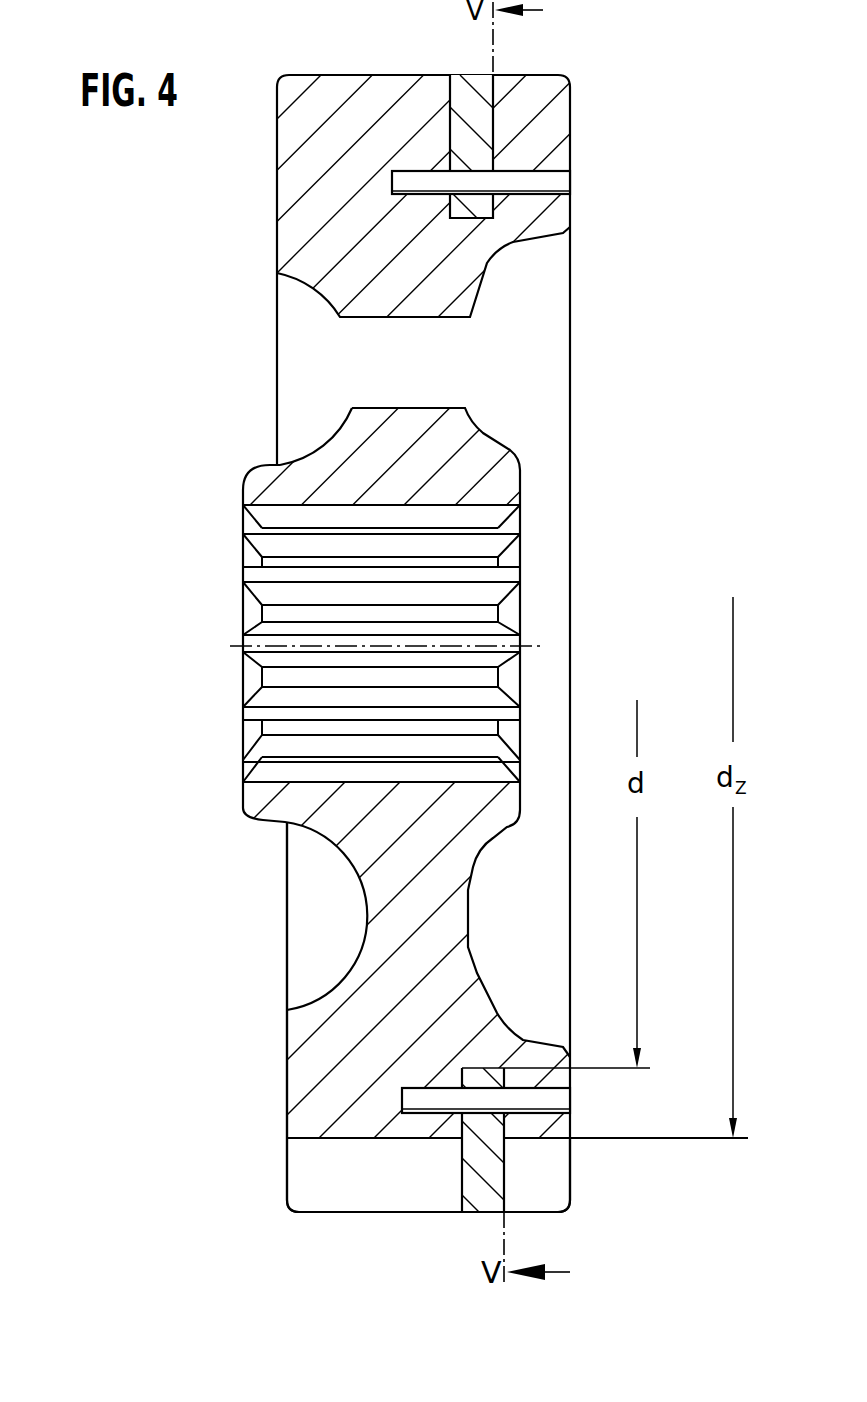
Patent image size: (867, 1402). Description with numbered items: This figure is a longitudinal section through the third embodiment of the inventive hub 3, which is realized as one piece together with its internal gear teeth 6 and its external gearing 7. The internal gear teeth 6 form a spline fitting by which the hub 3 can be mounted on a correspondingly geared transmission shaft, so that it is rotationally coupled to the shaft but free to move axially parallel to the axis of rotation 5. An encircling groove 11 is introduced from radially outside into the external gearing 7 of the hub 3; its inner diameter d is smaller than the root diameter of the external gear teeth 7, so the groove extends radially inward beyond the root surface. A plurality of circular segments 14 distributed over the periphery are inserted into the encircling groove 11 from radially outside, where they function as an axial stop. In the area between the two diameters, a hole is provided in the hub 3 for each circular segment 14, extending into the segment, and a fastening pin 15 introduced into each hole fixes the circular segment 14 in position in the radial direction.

The hub 3 is at (198, 458).
The axis of rotation 5 is at (541, 645).
The internal gear teeth 6 is at (492, 560).
The external gearing 7 is at (262, 1167).
The encircling groove 11 is at (449, 62).
The circular segment 14 is at (480, 1186).
The fastening pin 15 is at (560, 182).